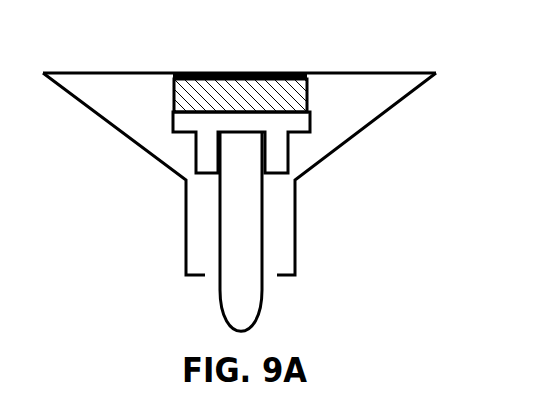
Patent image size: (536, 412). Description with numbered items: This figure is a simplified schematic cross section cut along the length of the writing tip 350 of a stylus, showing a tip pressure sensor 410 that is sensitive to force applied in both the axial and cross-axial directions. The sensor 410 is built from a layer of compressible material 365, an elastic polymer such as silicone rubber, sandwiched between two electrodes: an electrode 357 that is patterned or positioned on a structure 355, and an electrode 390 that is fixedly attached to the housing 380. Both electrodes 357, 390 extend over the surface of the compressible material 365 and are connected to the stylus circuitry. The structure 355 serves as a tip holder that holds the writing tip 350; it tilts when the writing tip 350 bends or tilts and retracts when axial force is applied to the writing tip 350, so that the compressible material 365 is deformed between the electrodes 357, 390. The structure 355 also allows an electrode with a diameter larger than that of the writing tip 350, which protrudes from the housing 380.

The writing tip 350 is at (220, 298).
The structure 355 is at (282, 121).
The electrode 357 is at (200, 110).
The compressible material 365 is at (309, 86).
The housing 380 is at (95, 112).
The electrode 390 is at (205, 73).
The tip pressure sensor 410 is at (352, 103).